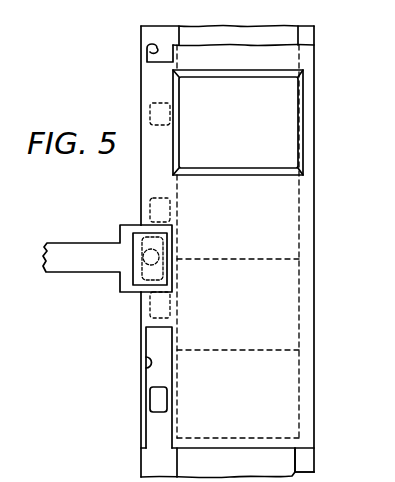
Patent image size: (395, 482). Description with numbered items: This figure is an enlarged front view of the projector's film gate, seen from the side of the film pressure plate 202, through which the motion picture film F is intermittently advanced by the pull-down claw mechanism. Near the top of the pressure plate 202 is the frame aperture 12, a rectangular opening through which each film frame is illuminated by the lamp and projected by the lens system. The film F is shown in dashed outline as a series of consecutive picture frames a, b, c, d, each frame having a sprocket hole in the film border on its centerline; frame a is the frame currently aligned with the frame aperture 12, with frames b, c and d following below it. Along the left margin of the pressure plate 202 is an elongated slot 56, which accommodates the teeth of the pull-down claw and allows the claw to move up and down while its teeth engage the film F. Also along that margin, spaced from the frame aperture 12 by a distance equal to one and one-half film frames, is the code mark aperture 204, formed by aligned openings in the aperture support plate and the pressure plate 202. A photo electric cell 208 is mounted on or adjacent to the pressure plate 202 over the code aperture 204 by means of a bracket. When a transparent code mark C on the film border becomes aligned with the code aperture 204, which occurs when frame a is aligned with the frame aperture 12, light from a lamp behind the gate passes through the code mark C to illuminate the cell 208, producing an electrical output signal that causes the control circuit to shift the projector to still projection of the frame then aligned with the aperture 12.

The aperture 12 is at (303, 118).
The elongated slot 56 is at (147, 47).
The film pressure plate 202 is at (306, 200).
The code mark aperture 204 is at (161, 252).
The photo electric cell 208 is at (128, 282).
The code mark C is at (166, 268).
The motion picture film F is at (300, 457).
The picture frame a is at (238, 134).
The picture frame b is at (243, 214).
The picture frame c is at (240, 322).
The picture frame d is at (242, 400).